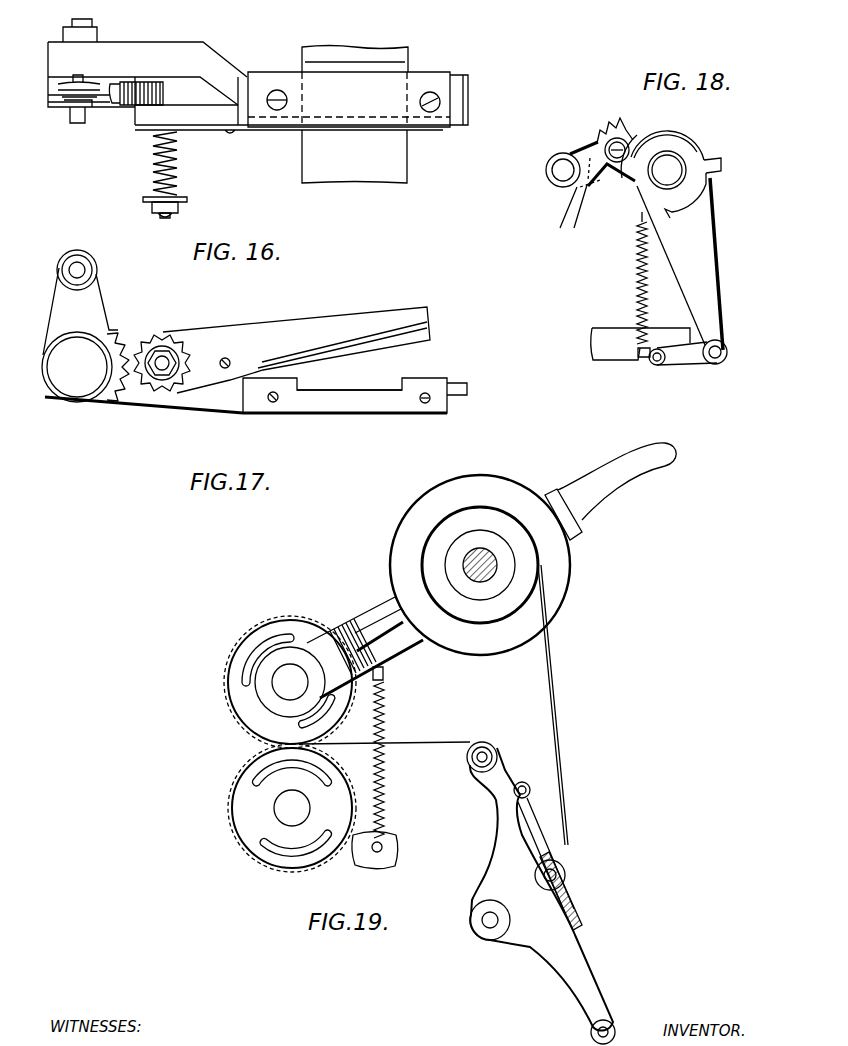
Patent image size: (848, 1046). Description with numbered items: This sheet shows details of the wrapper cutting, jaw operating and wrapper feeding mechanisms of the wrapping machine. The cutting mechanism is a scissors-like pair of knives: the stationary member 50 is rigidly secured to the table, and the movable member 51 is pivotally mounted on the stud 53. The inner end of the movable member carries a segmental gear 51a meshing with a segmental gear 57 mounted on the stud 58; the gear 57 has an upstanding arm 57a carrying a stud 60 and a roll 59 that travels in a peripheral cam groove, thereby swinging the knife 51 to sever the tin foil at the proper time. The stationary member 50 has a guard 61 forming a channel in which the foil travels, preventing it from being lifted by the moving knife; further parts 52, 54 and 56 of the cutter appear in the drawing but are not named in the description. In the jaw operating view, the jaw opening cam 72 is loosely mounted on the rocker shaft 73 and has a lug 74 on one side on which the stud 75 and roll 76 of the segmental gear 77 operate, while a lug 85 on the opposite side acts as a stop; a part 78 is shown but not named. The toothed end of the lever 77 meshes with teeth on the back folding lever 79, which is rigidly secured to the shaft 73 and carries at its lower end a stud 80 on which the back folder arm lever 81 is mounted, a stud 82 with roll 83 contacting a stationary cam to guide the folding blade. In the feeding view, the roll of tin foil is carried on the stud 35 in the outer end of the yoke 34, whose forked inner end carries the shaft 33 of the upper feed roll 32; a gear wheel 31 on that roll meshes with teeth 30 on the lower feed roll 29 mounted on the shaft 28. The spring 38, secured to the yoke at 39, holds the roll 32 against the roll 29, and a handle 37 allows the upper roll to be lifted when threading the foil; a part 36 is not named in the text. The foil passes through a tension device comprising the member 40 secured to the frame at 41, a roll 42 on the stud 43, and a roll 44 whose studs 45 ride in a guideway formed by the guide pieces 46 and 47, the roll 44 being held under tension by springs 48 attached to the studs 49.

In FIG. 16, the stationary member 50 is at (227, 60).
In FIG. 17, the stationary member 50 is at (287, 408).
In FIG. 16, the movable member 51 is at (277, 132).
In FIG. 17, the movable member 51 is at (296, 343).
In FIG. 17, the segmental gear 51a is at (155, 333).
In FIG. 16, the block 52 is at (145, 118).
In FIG. 16, the stud 53 is at (163, 216).
In FIG. 17, the stud 53 is at (163, 371).
In FIG. 16, the spring 54 is at (177, 165).
In FIG. 16, the nut 56 is at (182, 208).
In FIG. 16, the segmental gear 57 is at (185, 198).
In FIG. 17, the segmental gear 57 is at (102, 394).
In FIG. 17, the upstanding arm 57a is at (80, 311).
In FIG. 17, the stud 58 is at (77, 388).
In FIG. 17, the roll 59 is at (95, 267).
In FIG. 17, the stud 60 is at (77, 250).
In FIG. 17, the guard 61 is at (392, 378).
In FIG. 18, the jaw opening cam 72 is at (723, 193).
In FIG. 18, the rocker shaft 73 is at (678, 168).
In FIG. 18, the lug 74 is at (620, 170).
In FIG. 18, the stud 75 is at (626, 142).
In FIG. 18, the roll 76 is at (615, 137).
In FIG. 18, the segmental gear 77 is at (560, 219).
In FIG. 18, the boss 78 is at (562, 166).
In FIG. 18, the back folding lever 79 is at (712, 270).
In FIG. 18, the stud 80 is at (715, 365).
In FIG. 18, the back folder arm lever 81 is at (683, 368).
In FIG. 18, the stud 82 is at (640, 307).
In FIG. 18, the roll 83 is at (656, 370).
In FIG. 18, the lug 85 is at (722, 161).
In FIG. 19, the shaft 28 is at (290, 818).
In FIG. 19, the lower feed roll 29 is at (242, 810).
In FIG. 19, the teeth 30 is at (233, 772).
In FIG. 19, the gear wheel 31 is at (228, 660).
In FIG. 19, the feed roll 32 is at (265, 632).
In FIG. 19, the shaft 33 is at (295, 657).
In FIG. 19, the yoke 34 is at (350, 617).
In FIG. 19, the stud 35 is at (502, 575).
In FIG. 19, the hand wheel 36 is at (505, 487).
In FIG. 19, the handle 37 is at (593, 480).
In FIG. 19, the spring 38 is at (383, 733).
In FIG. 19, the spring attachment point 39 is at (383, 670).
In FIG. 19, the member 40 is at (508, 855).
In FIG. 19, the securing point 41 is at (487, 928).
In FIG. 19, the roll 42 is at (483, 742).
In FIG. 19, the stud 43 is at (480, 762).
In FIG. 19, the roll 44 is at (558, 877).
In FIG. 19, the studs 45 is at (557, 866).
In FIG. 19, the guide piece 46 is at (565, 705).
In FIG. 19, the guide piece 47 is at (533, 845).
In FIG. 19, the springs 48 is at (570, 904).
In FIG. 19, the studs 49 is at (612, 1025).